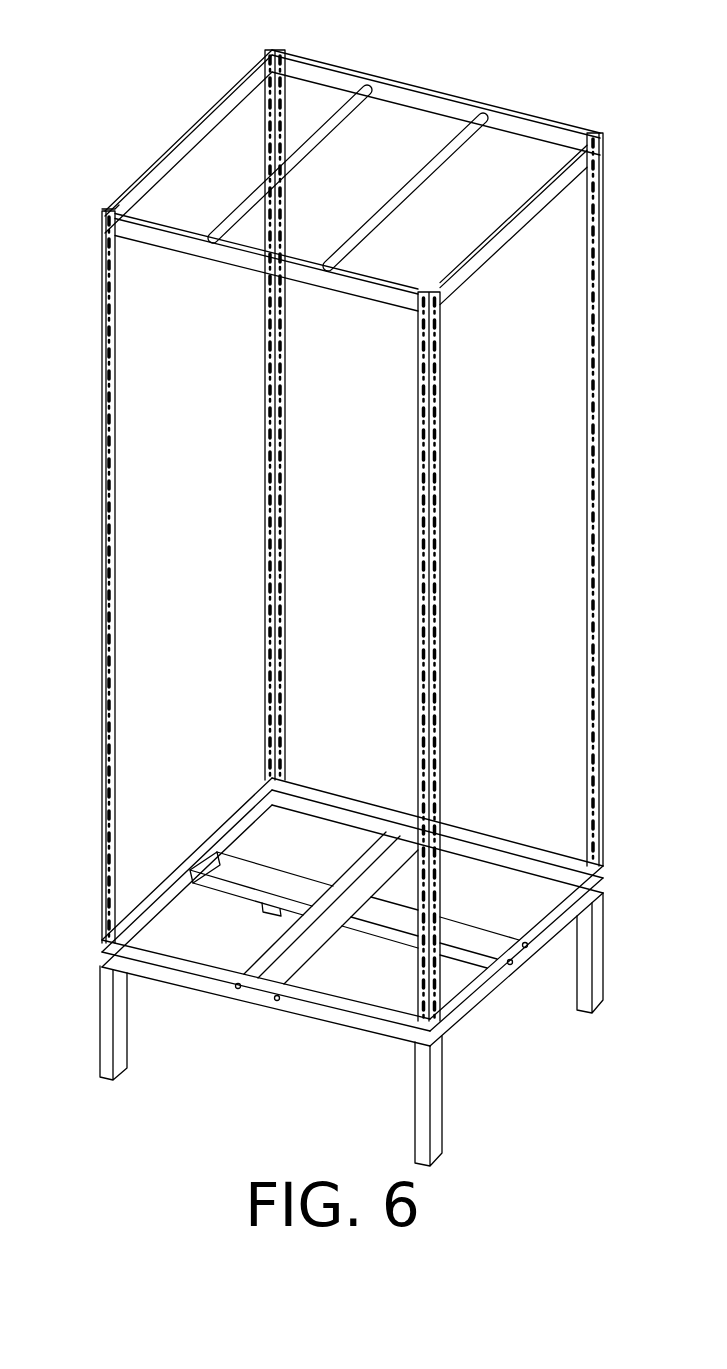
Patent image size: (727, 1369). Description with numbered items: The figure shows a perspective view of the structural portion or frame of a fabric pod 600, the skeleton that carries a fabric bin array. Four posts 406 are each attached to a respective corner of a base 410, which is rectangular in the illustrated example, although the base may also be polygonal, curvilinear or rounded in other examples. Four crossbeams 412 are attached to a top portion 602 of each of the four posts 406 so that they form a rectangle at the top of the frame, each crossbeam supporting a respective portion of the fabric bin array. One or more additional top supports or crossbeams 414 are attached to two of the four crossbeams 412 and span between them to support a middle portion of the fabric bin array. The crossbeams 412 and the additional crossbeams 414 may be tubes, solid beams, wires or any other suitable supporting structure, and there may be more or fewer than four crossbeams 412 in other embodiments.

The fabric pod 600 is at (180, 45).
The crossbeams 412 is at (149, 168).
The additional top supports or crossbeams 414 is at (433, 162).
The posts 406 is at (101, 372).
The top portion 602 is at (101, 212).
The base 410 is at (252, 1002).